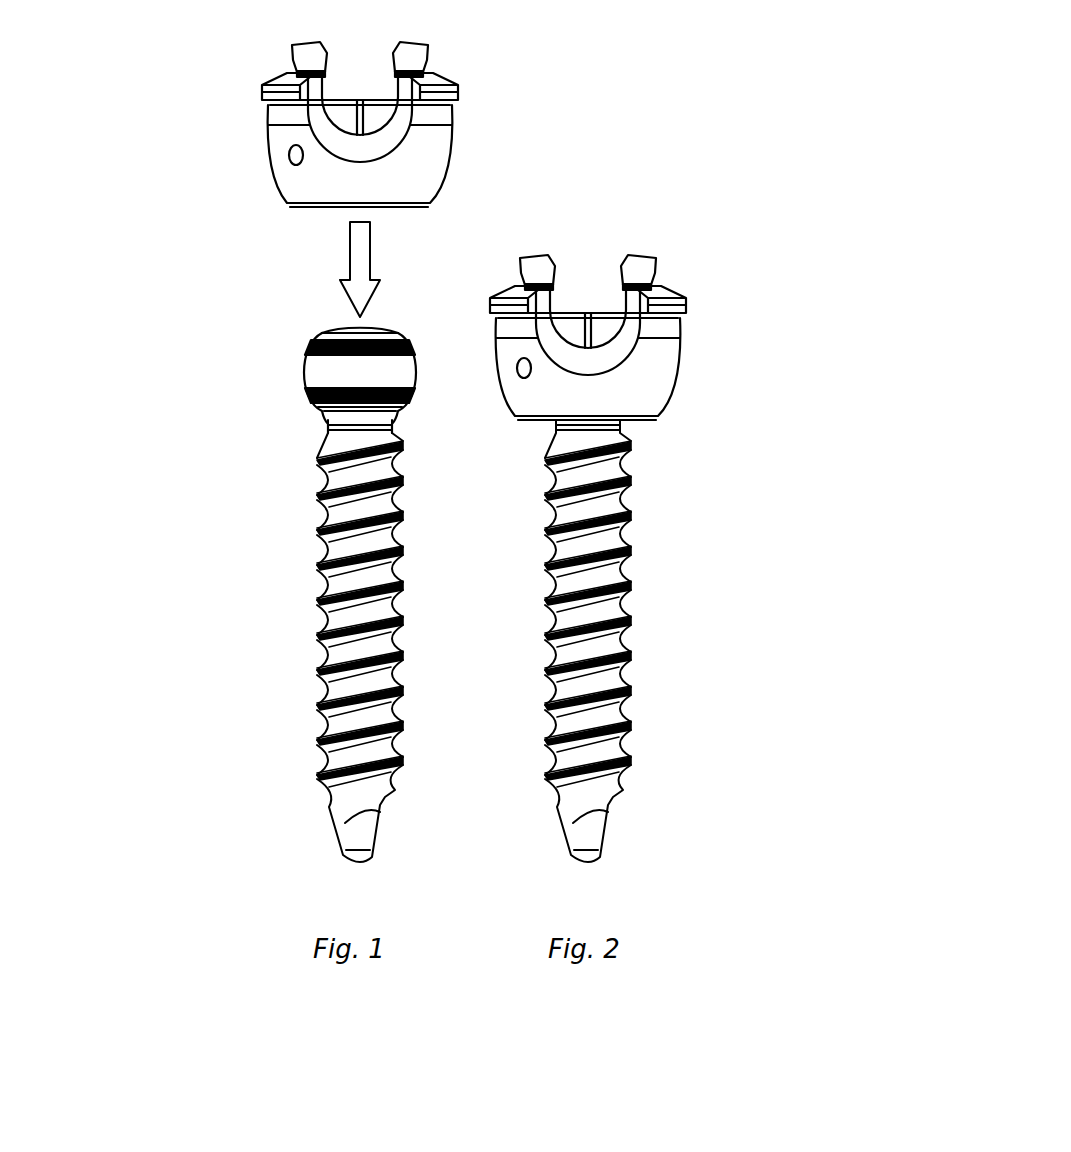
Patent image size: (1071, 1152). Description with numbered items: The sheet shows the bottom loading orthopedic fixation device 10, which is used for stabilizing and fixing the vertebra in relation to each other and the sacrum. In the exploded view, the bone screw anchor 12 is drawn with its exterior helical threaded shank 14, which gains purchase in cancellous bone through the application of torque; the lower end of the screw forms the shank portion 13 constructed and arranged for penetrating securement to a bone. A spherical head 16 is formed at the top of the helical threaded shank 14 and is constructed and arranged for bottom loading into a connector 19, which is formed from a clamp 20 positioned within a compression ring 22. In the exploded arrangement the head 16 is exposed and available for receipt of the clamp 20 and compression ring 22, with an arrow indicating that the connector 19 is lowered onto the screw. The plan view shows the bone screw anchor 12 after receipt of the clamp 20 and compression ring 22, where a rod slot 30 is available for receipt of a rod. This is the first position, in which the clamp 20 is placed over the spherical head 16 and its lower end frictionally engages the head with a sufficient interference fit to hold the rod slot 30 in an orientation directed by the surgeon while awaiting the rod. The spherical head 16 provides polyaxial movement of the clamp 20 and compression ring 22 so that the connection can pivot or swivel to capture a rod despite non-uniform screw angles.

In FIG. 2, the orthopedic fixation device 10 is at (692, 523).
In FIG. 1, the bone screw anchor 12 is at (298, 595).
In FIG. 1, the shank portion 13 is at (390, 600).
In FIG. 1, the helical threaded shank 14 is at (341, 641).
In FIG. 1, the spherical head 16 is at (410, 388).
In FIG. 1, the connector 19 is at (311, 111).
In FIG. 1, the clamp 20 is at (428, 50).
In FIG. 2, the clamp 20 is at (665, 260).
In FIG. 1, the compression ring 22 is at (448, 162).
In FIG. 2, the compression ring 22 is at (687, 368).
In FIG. 2, the rod slot 30 is at (597, 272).